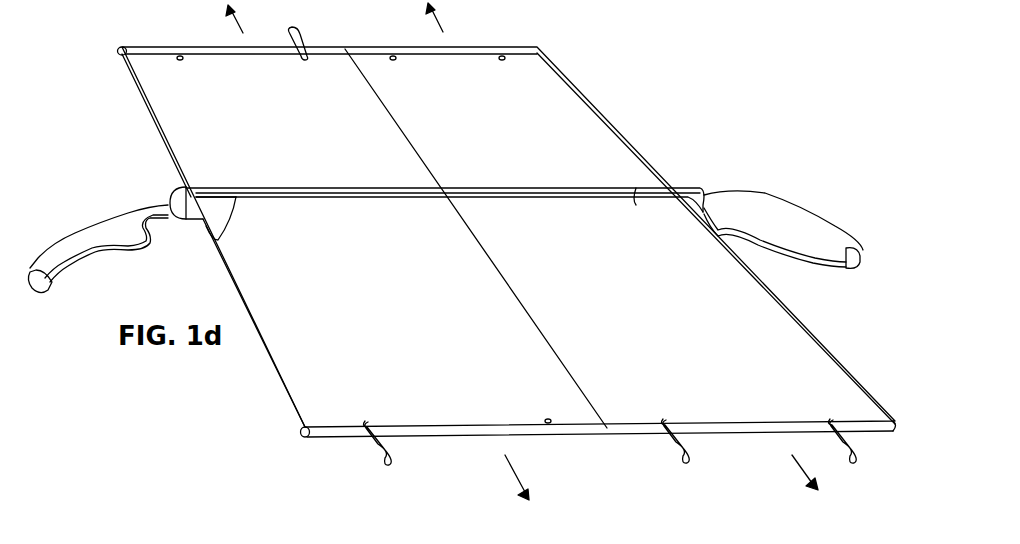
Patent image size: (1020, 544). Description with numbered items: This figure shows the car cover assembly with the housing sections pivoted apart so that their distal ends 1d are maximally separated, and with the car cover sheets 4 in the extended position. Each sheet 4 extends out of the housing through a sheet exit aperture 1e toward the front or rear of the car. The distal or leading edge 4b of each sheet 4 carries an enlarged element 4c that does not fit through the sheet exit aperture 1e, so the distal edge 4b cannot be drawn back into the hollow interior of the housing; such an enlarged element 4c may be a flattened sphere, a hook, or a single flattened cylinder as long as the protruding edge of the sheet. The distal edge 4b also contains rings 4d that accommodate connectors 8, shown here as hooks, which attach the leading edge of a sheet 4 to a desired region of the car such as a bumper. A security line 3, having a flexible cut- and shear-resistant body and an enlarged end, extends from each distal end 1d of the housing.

The distal end of housing section 1d is at (176, 196).
The housing sheet exit aperture 1e is at (222, 210).
The security line 3 is at (96, 224).
The car cover sheet 4 is at (508, 237).
The distal edge of car cover sheet 4b is at (146, 47).
The enlarged element 4c is at (108, 45).
The ring 4d is at (181, 56).
The connector 8 is at (298, 32).